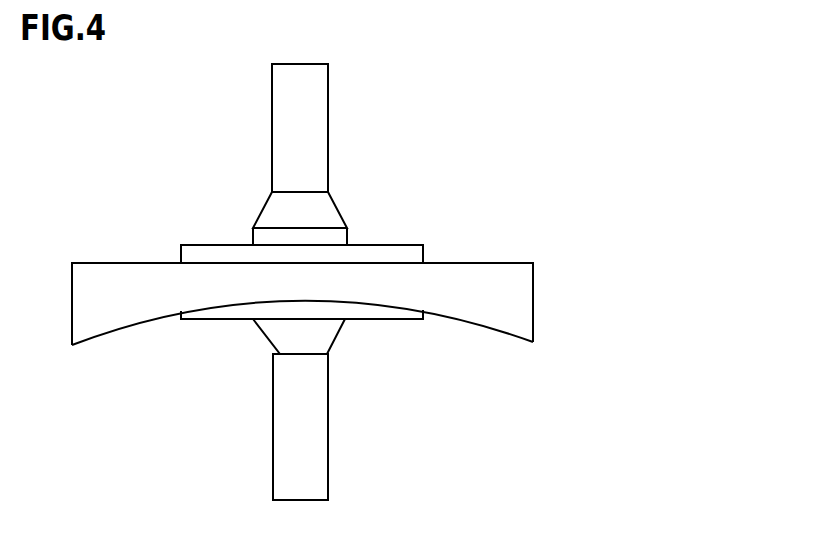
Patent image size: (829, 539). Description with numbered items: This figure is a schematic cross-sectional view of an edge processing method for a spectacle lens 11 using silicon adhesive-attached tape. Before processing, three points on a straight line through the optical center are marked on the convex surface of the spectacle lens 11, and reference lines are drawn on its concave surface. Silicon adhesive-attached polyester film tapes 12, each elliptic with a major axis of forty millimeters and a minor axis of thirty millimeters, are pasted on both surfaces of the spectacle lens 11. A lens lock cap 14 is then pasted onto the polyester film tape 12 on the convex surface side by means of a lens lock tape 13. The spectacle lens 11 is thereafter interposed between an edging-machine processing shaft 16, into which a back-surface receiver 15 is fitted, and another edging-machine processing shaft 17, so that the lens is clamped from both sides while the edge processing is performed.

The spectacle lens 11 is at (475, 290).
The silicon adhesive-attached polyester film tape 12 is at (395, 254).
The lens lock tape 13 is at (308, 237).
The lens lock cap 14 is at (310, 209).
The back-surface receiver 15 is at (292, 337).
The edging-machine processing shaft 16 is at (292, 427).
The edging-machine processing shaft 17 is at (308, 146).